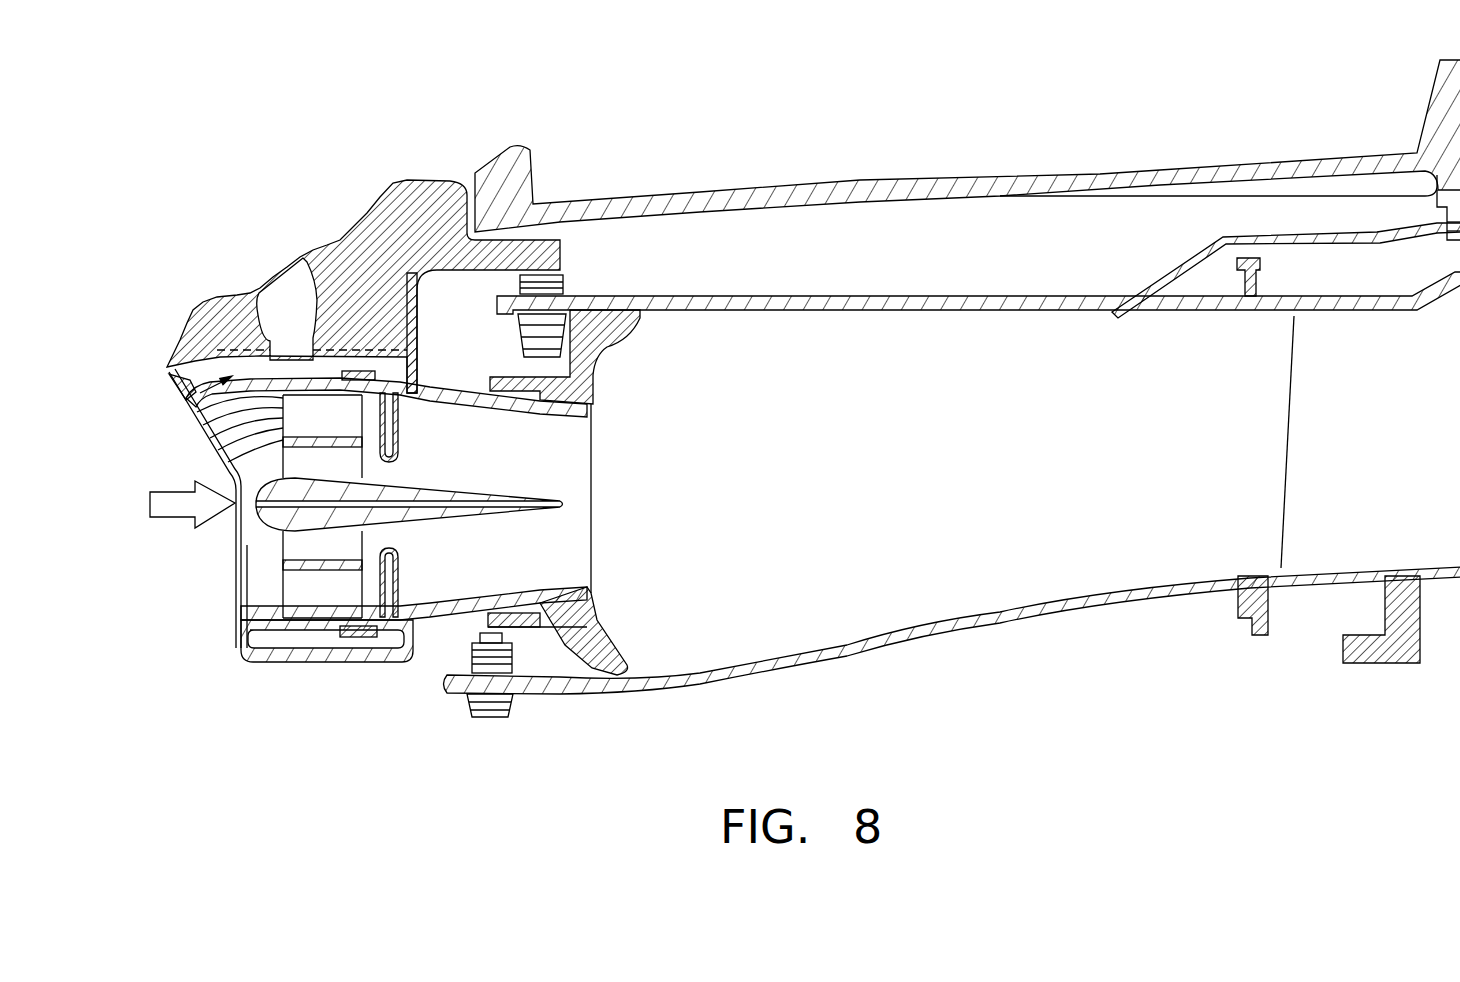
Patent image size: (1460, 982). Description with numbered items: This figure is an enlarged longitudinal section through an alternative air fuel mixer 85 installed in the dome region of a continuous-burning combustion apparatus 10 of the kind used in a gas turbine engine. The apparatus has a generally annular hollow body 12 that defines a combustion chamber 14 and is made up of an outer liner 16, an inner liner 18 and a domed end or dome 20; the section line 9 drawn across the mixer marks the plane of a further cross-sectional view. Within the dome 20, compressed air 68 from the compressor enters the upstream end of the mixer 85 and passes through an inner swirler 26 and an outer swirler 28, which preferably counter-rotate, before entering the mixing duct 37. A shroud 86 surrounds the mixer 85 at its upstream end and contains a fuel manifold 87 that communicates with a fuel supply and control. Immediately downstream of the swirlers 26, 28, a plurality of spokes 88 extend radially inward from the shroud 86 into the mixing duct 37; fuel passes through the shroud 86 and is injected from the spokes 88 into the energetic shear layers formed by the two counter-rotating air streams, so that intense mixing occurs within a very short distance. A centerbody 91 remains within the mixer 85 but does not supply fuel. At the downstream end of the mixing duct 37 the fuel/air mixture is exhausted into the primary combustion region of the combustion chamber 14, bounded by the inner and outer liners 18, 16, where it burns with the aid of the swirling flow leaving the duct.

The section line 9- 9 is at (340, 138).
The continuous-burning combustion apparatus 10 is at (357, 690).
The hollow body 12 is at (813, 287).
The combustion chamber 14 is at (901, 470).
The outer liner 16 is at (1013, 313).
The inner liner 18 is at (1023, 598).
The dome 20 is at (602, 340).
The inner swirler 26 is at (290, 463).
The outer swirler 28 is at (300, 420).
The mixing duct 37 is at (480, 603).
The compressed air 68 is at (167, 519).
The alternative air fuel mixer 85 is at (610, 553).
The shroud 86 is at (238, 662).
The fuel manifold 87 is at (200, 397).
The spokes 88 is at (397, 460).
The centerbody 91 is at (478, 476).